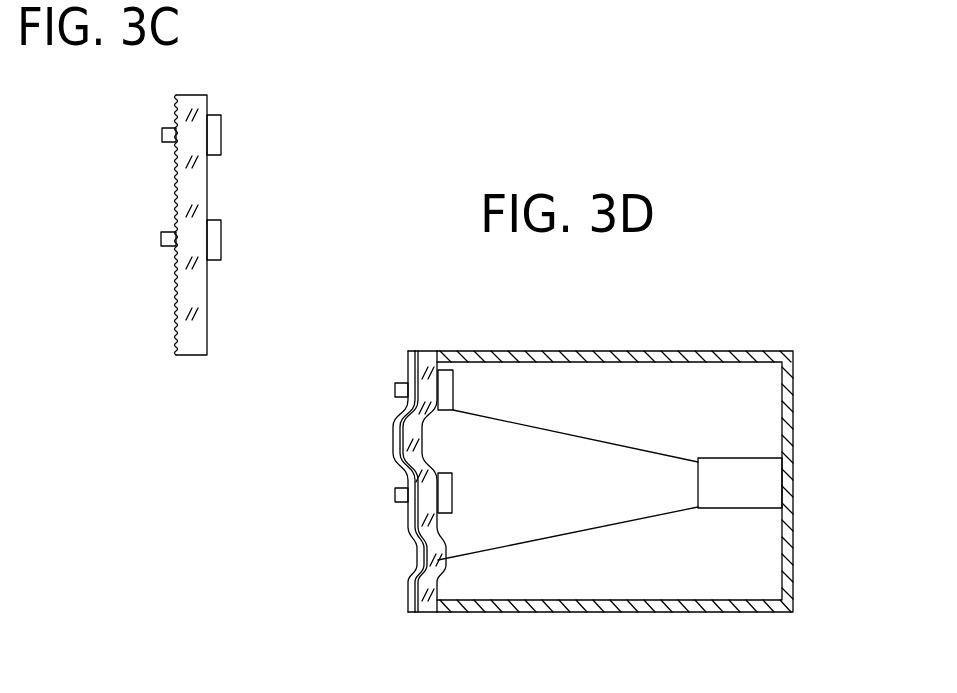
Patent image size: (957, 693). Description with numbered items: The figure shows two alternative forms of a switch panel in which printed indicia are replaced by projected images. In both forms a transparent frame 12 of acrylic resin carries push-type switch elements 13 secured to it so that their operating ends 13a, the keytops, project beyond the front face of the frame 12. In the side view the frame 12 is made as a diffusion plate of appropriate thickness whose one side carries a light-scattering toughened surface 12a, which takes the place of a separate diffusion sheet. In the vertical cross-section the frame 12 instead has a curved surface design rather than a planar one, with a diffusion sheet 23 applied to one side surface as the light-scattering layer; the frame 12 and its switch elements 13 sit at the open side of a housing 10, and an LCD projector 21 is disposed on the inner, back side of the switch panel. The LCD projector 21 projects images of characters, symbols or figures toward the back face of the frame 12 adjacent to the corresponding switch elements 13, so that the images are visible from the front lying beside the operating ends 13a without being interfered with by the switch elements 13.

In FIG. 3D, the housing 10 is at (728, 350).
In FIG. 3C, the frame 12 is at (180, 200).
In FIG. 3D, the frame 12 is at (424, 362).
In FIG. 3C, the light-scattering toughened surface 12a is at (176, 312).
In FIG. 3C, the switch elements 13 is at (222, 226).
In FIG. 3D, the switch elements 13 is at (453, 488).
In FIG. 3C, the operating ends 13a is at (162, 134).
In FIG. 3D, the operating ends 13a is at (395, 387).
In FIG. 3D, the LCD projector 21 is at (770, 482).
In FIG. 3D, the diffusion sheet 23 is at (408, 362).